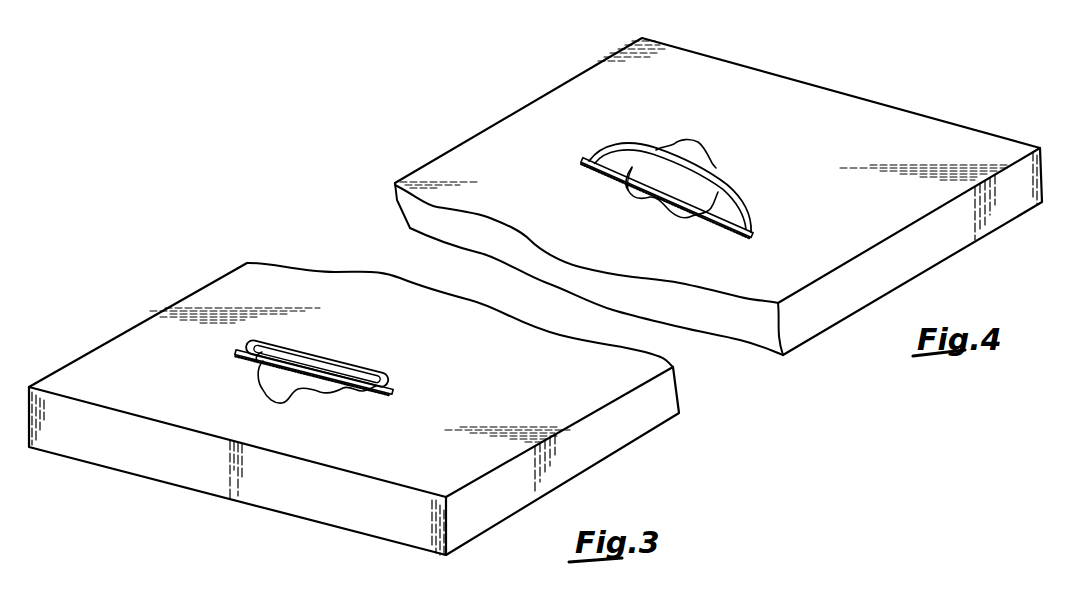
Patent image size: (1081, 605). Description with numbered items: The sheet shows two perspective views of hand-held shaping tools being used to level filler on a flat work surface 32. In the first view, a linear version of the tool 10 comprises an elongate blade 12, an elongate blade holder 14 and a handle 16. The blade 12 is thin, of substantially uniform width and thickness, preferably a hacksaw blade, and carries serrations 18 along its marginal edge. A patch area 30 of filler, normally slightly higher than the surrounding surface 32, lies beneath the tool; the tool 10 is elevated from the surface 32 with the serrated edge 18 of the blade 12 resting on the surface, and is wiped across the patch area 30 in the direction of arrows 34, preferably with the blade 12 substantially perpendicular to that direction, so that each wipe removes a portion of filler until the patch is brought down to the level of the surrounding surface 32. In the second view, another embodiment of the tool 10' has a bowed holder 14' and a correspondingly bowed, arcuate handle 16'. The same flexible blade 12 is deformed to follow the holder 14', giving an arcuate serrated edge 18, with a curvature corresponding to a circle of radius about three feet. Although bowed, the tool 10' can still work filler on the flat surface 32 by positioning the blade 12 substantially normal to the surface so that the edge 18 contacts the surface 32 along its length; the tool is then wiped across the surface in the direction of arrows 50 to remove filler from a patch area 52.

In FIG. 3, the tool 10 is at (316, 349).
In FIG. 4, the tool 10' is at (694, 180).
In FIG. 3, the blade 12 is at (366, 401).
In FIG. 4, the blade 12 is at (594, 171).
In FIG. 3, the blade holder 14 is at (347, 372).
In FIG. 4, the bowed holder 14' is at (701, 199).
In FIG. 3, the handle 16 is at (341, 359).
In FIG. 4, the bowed handle 16' is at (708, 178).
In FIG. 3, the serrations 18 is at (255, 361).
In FIG. 4, the serrations 18 is at (716, 214).
In FIG. 3, the patch area 30 is at (286, 390).
In FIG. 3, the work surface 32 is at (553, 390).
In FIG. 4, the work surface 32 is at (886, 225).
In FIG. 3, the arrows 34 is at (213, 365).
In FIG. 4, the arrows 50 is at (565, 172).
In FIG. 4, the patch area 52 is at (696, 153).